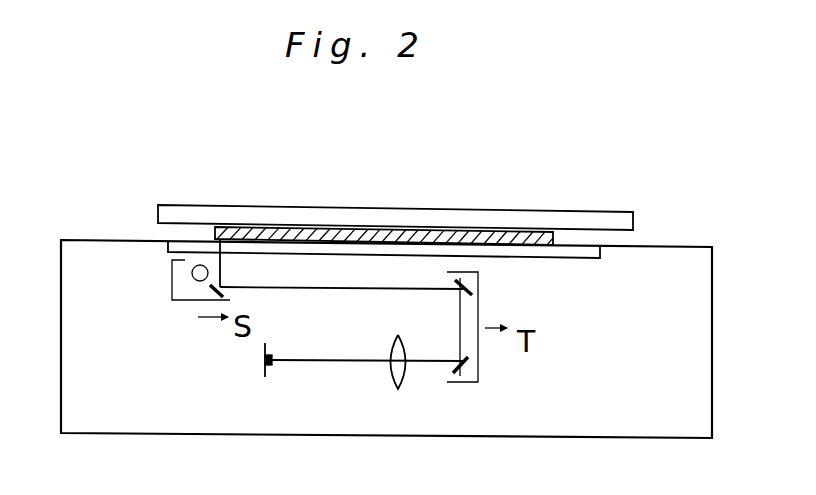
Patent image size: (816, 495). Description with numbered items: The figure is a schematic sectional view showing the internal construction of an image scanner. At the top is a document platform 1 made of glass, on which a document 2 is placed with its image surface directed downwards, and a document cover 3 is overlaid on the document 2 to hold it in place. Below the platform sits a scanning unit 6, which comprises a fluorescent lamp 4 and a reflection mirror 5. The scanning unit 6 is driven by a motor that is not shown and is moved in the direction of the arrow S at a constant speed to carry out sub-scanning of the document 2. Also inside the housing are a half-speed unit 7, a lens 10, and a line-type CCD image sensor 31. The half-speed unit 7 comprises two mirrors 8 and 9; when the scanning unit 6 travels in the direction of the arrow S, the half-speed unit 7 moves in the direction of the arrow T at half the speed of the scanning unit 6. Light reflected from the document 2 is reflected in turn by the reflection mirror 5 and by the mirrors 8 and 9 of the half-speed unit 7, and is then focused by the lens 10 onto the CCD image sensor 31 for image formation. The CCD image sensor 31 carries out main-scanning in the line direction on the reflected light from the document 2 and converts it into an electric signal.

The document platform 1 is at (603, 258).
The document 2 is at (543, 241).
The document cover 3 is at (617, 215).
The fluorescent lamp 4 is at (190, 272).
The reflection mirror 5 is at (212, 288).
The scanning unit 6 is at (172, 300).
The half-speed unit 7 is at (480, 278).
The mirror 8 is at (480, 298).
The mirror 9 is at (463, 365).
The lens 10 is at (403, 383).
The line-type CCD image sensor 31 is at (270, 373).